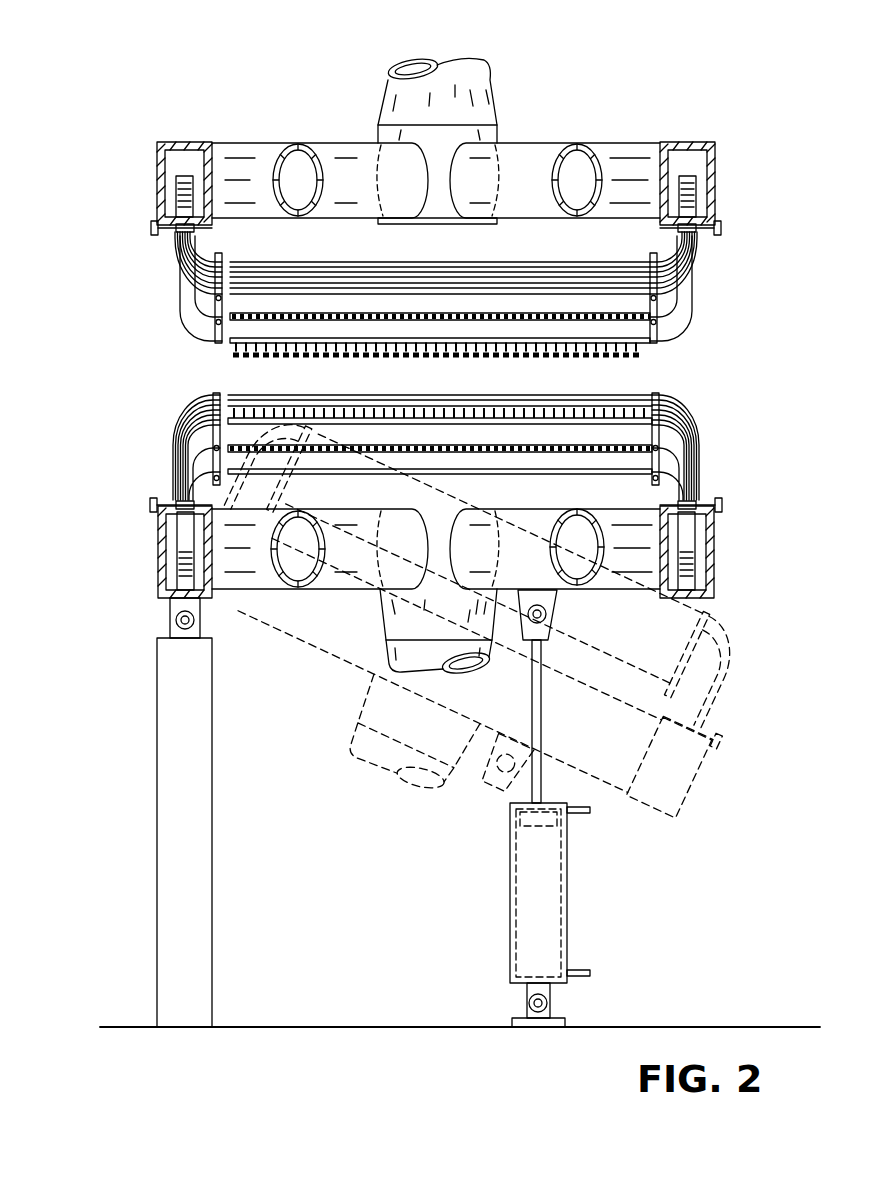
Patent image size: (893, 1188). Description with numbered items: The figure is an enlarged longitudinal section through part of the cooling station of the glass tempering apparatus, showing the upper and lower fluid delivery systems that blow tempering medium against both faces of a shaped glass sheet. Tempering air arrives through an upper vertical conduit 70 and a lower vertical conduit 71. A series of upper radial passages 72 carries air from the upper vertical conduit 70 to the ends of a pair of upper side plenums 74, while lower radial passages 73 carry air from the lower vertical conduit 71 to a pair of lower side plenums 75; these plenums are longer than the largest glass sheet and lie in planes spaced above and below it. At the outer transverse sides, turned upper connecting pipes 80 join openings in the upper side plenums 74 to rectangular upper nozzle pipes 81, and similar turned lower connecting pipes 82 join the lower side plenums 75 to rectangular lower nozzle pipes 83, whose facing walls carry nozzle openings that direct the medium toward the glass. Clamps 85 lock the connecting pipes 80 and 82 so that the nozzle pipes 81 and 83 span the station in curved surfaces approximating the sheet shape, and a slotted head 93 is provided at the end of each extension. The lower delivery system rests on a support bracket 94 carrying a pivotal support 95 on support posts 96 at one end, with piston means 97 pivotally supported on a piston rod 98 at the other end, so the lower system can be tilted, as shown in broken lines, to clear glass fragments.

The upper vertical conduit 70 is at (485, 60).
The lower vertical conduit 71 is at (386, 650).
The upper radial passages 72 is at (605, 143).
The lower radial passages 73 is at (610, 507).
The upper side plenums 74 is at (176, 143).
The lower side plenums 75 is at (158, 546).
The upper connecting pipes 80 is at (197, 265).
The upper nozzle pipes 81 is at (316, 262).
The lower connecting pipes 82 is at (190, 405).
The lower nozzle pipes 83 is at (330, 395).
The clamps 85 is at (714, 230).
The slotted head 93 is at (640, 350).
The support bracket 94 is at (162, 606).
The pivotal support 95 is at (174, 622).
The support posts 96 is at (157, 714).
The piston means 97 is at (568, 895).
The piston rod 98 is at (542, 722).